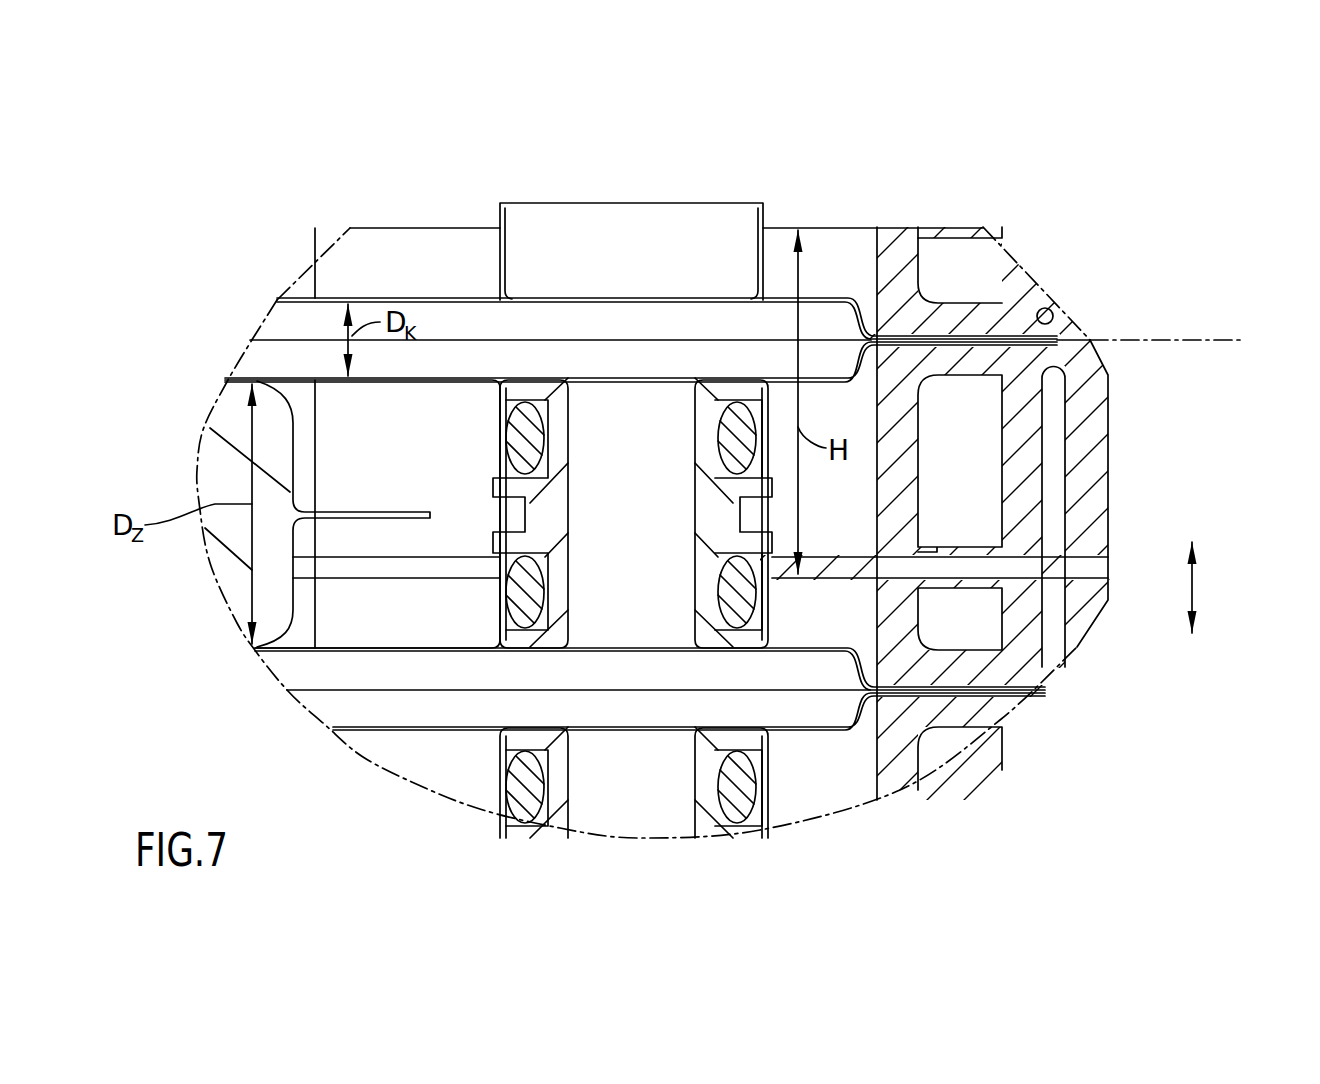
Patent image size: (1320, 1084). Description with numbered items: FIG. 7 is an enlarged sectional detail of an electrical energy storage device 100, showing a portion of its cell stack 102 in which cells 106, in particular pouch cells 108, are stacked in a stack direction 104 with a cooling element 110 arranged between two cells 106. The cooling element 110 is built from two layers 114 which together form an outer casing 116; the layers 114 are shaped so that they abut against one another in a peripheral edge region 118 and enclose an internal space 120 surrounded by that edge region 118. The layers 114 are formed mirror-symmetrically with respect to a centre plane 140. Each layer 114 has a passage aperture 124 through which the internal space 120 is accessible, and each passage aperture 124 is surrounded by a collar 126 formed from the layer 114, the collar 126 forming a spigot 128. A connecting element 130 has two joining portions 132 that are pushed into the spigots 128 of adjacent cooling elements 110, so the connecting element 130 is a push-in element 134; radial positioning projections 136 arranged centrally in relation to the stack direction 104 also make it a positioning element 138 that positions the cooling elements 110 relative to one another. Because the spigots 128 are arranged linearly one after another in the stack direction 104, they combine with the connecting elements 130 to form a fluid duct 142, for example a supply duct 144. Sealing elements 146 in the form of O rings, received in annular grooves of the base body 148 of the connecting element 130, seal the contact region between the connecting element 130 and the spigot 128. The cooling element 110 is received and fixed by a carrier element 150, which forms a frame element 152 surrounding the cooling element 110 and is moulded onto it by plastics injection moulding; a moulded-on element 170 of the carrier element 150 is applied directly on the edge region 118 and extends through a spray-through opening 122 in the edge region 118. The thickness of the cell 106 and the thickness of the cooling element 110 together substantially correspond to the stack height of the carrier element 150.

The electrical energy storage device 100 is at (1112, 168).
The cell stack 102 is at (1218, 168).
The stack direction 104 is at (1196, 598).
The cell 106 is at (225, 478).
The pouch cell 108 is at (240, 418).
The cooling element 110 is at (433, 290).
The layer 114 is at (302, 298).
The outer casing 116 is at (837, 283).
The edge region 118 is at (1050, 310).
The internal space 120 is at (520, 350).
The spray-through opening 122 is at (980, 305).
The passage aperture 124 is at (597, 280).
The collar 126 is at (763, 620).
The spigot 128 is at (765, 220).
The connecting element 130 is at (560, 602).
The joining portion 132 is at (612, 617).
The push-in element 134 is at (582, 560).
The radial positioning projection 136 is at (497, 546).
The positioning element 138 is at (537, 666).
The centre plane 140 is at (1228, 340).
The fluid duct 142 is at (697, 250).
The supply duct 144 is at (635, 237).
The sealing element 146 is at (763, 588).
The base body 148 is at (523, 642).
The carrier element 150 is at (1095, 428).
The frame element 152 is at (1100, 462).
The moulded-on element 170 is at (952, 322).